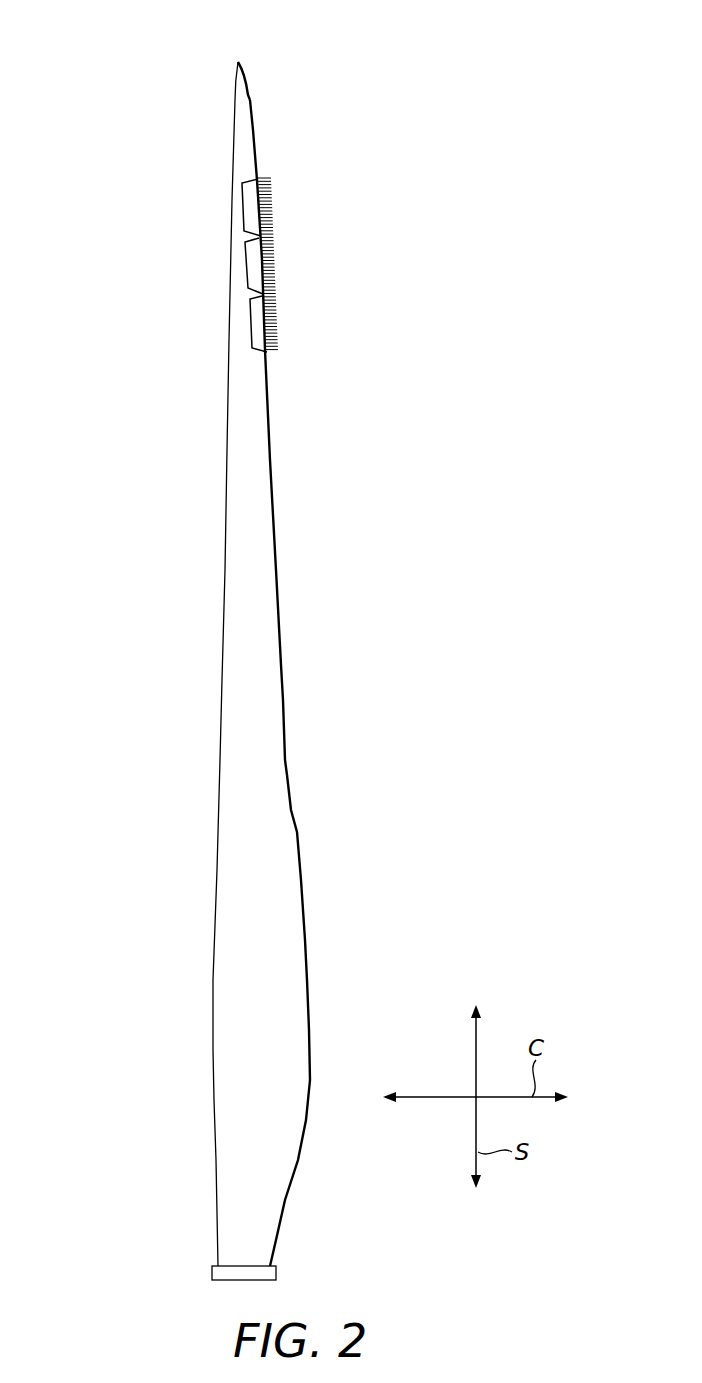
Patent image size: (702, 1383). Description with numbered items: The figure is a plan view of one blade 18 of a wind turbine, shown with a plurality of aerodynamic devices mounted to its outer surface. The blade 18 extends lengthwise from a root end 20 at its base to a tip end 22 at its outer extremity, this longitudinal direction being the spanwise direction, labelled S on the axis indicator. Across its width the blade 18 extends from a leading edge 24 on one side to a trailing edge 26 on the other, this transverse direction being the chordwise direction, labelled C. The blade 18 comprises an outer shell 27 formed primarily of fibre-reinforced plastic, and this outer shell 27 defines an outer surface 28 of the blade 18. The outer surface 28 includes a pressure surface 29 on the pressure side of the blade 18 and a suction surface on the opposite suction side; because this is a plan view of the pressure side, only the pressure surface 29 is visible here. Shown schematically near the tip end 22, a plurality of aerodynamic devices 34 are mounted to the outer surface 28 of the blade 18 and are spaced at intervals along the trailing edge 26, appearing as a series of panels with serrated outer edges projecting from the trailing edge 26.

The blade 18 is at (208, 646).
The root end 20 is at (278, 1272).
The tip end 22 is at (239, 59).
The leading edge 24 is at (225, 613).
The trailing edge 26 is at (306, 941).
The outer shell 27 is at (303, 826).
The outer surface 28 is at (281, 721).
The pressure surface 29 is at (276, 672).
The aerodynamic devices 34 is at (257, 326).